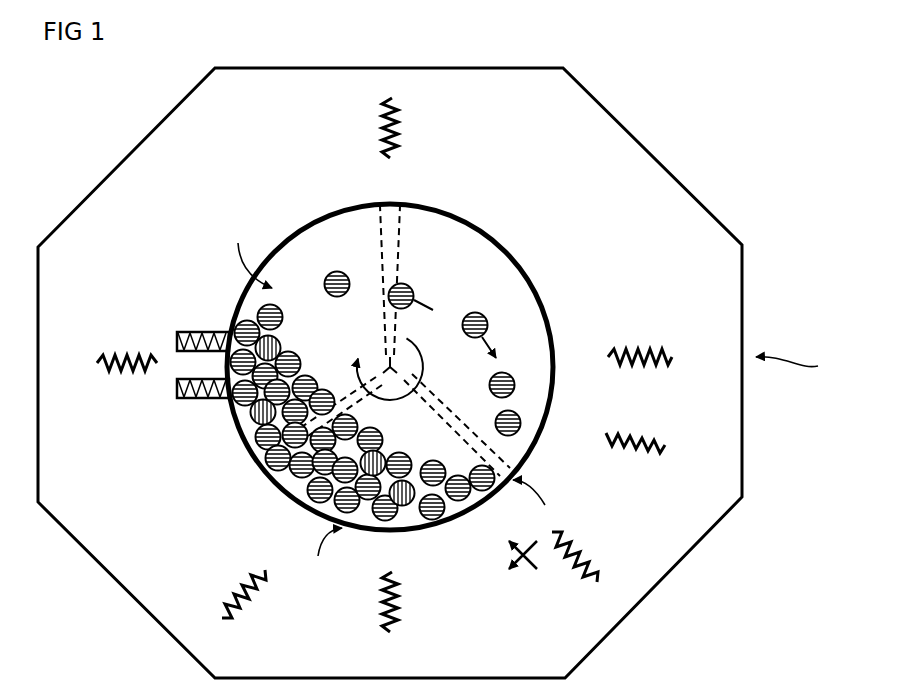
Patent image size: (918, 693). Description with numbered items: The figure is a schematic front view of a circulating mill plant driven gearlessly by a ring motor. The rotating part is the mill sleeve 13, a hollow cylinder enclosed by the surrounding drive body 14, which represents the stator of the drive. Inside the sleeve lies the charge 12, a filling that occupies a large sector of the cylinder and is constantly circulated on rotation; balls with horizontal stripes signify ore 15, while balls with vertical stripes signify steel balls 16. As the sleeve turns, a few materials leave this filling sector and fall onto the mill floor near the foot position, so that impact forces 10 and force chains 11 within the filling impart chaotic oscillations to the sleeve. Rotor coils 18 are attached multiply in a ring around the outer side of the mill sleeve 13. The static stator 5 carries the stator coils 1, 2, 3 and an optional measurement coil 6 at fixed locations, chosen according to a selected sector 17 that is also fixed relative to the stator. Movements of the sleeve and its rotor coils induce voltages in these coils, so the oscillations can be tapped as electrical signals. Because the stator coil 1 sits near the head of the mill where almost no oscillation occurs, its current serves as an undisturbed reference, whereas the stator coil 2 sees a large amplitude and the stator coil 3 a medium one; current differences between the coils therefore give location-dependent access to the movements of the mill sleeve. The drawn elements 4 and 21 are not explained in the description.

The stator coil 1 is at (400, 130).
The stator coil 2 is at (588, 545).
The stator coil 3 is at (238, 570).
The direction of rotation 4 is at (422, 352).
The stator 5 is at (798, 366).
The measurement coil 6 is at (128, 345).
The impact forces 10 is at (520, 446).
The force chains 11 is at (318, 410).
The charge 12 is at (393, 403).
The mill sleeve 13 is at (508, 243).
The drive body 14 is at (628, 120).
The ore 15 is at (477, 312).
The steel balls 16 is at (282, 345).
The sector 17 is at (405, 238).
The rotor coils 18 is at (205, 330).
The heater 21 is at (662, 437).